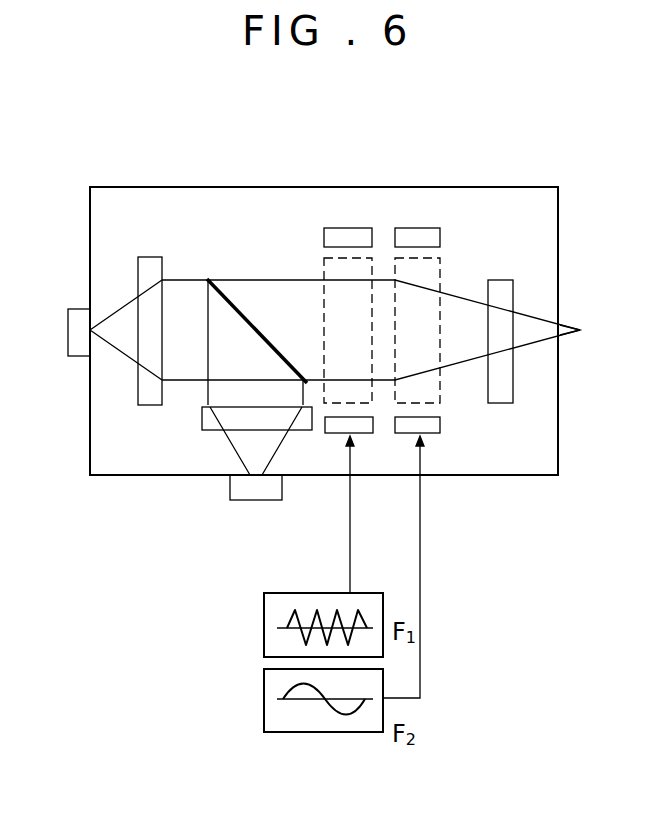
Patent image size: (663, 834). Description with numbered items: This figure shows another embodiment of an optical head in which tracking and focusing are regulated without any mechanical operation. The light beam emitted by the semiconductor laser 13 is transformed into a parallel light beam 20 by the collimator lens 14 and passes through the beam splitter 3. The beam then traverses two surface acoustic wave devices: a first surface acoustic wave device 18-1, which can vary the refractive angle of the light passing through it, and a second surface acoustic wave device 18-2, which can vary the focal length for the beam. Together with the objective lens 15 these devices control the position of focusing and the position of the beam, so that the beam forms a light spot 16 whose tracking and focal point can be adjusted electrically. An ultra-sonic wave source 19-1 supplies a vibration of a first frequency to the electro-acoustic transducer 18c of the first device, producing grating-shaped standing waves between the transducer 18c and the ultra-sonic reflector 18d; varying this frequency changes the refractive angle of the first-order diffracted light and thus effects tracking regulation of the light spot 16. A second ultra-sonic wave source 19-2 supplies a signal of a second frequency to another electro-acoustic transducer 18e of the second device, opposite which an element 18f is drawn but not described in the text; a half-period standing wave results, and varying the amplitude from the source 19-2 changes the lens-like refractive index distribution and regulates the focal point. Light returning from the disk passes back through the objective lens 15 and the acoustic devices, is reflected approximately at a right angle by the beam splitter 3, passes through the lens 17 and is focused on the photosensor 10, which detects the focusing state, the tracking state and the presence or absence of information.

The beam splitter 3 is at (269, 297).
The photosensor 10 is at (257, 500).
The semiconductor laser 13 is at (301, 331).
The collimator lens 14 is at (150, 397).
The objective lens 15 is at (507, 393).
The light spot 16 is at (580, 330).
The lens 17 is at (208, 423).
The light beam 20 is at (127, 357).
The electro-acoustic transducer 18c is at (333, 434).
The ultra-sonic reflector 18d is at (347, 237).
The electro-acoustic transducer 18e is at (432, 435).
The electrode 18f is at (418, 237).
The surface acoustic wave device 18-1 is at (372, 388).
The surface acoustic wave device 18-2 is at (443, 262).
The ultra-sonic wave source 19-1 is at (264, 627).
The ultra-sonic wave source 19-2 is at (264, 698).